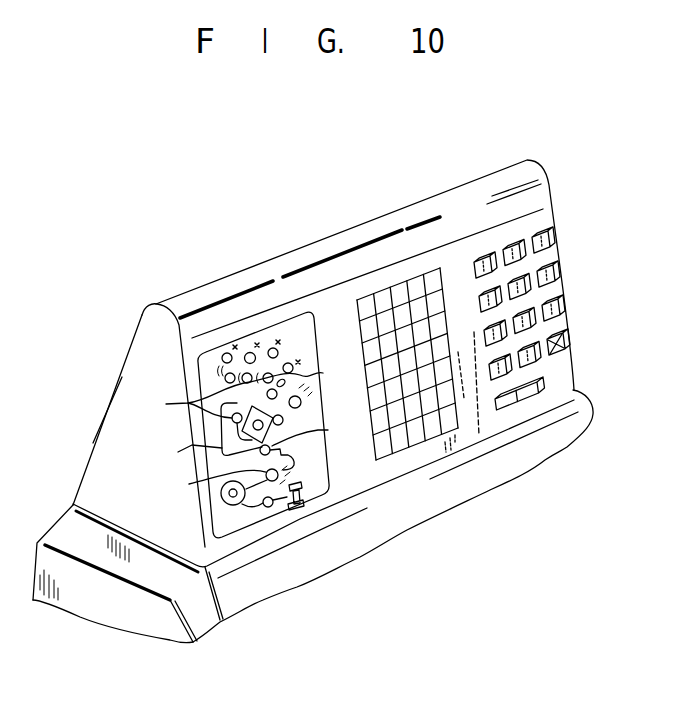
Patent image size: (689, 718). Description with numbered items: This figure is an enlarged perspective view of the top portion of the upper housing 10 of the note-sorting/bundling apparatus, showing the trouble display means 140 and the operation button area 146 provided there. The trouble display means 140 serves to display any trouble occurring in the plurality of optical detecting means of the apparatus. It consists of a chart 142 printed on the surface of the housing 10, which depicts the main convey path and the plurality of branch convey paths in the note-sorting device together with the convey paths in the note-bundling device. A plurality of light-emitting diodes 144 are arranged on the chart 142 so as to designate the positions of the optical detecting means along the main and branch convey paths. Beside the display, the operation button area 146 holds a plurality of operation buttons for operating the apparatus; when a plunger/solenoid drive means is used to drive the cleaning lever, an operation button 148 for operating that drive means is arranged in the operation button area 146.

The upper housing 10 is at (110, 605).
The trouble display means 140 is at (312, 481).
The chart 142 is at (235, 425).
The light-emitting diodes 144 is at (247, 423).
The operation button area 146 is at (466, 262).
The operation button 148 is at (515, 400).